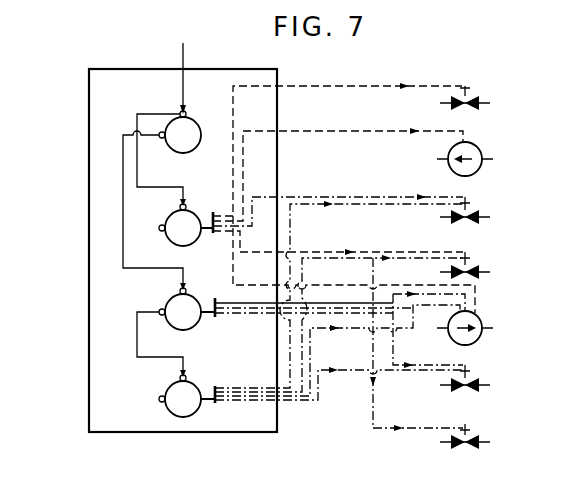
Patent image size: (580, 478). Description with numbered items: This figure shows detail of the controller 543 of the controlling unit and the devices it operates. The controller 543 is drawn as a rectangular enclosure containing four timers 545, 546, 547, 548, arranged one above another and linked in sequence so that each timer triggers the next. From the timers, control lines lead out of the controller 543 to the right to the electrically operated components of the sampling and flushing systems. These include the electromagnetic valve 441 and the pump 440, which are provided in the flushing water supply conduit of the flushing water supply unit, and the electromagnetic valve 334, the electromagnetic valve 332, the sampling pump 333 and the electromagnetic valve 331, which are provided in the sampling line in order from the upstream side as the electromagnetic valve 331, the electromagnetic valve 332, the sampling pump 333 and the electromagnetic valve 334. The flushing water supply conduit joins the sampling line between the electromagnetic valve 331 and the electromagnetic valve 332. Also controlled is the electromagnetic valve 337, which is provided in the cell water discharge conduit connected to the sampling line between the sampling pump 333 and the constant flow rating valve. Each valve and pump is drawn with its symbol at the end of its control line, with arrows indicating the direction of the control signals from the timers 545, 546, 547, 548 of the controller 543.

The controller 543 is at (89, 397).
The timer 545 is at (196, 148).
The timer 546 is at (196, 241).
The timer 547 is at (186, 330).
The timer 548 is at (198, 411).
The electromagnetic valve 441 is at (476, 91).
The pump 440 is at (478, 150).
The electromagnetic valve 334 is at (477, 210).
The electromagnetic valve 332 is at (476, 264).
The sampling pump 333 is at (478, 318).
The electromagnetic valve 331 is at (476, 377).
The electromagnetic valve 337 is at (476, 434).